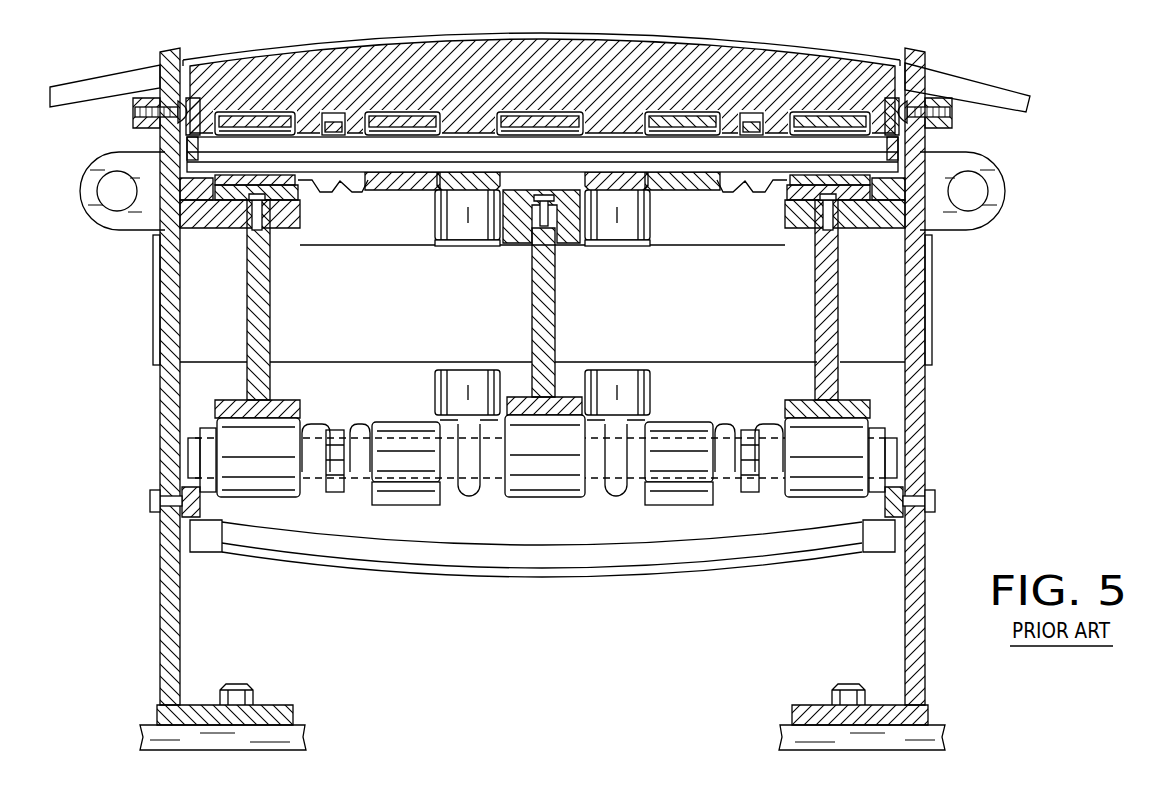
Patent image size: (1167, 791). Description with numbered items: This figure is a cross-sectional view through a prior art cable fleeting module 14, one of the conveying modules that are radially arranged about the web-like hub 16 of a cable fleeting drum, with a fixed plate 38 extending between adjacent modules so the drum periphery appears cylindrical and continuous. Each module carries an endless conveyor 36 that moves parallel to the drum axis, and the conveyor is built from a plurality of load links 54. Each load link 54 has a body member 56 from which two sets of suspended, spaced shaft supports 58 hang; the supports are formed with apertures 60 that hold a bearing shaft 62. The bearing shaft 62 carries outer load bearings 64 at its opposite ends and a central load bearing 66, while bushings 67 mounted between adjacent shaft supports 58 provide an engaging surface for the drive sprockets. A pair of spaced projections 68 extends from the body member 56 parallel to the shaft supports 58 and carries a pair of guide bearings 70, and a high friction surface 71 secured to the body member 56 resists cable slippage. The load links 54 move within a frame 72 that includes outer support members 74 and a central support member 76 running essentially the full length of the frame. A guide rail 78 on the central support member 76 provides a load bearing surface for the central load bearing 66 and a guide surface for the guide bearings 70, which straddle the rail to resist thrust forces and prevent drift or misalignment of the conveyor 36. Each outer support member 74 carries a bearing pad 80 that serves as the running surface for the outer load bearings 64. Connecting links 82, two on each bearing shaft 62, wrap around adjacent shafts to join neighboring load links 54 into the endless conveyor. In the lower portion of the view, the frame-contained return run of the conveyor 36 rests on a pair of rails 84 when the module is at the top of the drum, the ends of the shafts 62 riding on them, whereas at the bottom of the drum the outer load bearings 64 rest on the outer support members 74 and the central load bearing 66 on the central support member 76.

The cable fleeting module 14 is at (960, 300).
The hub 16 is at (780, 737).
The endless conveyor 36 is at (388, 30).
The fixed plate 38 is at (980, 88).
The load link 54 is at (562, 578).
The body member 56 is at (640, 540).
The shaft supports 58 is at (137, 245).
The apertures 60 is at (905, 456).
The bearing shaft 62 is at (195, 445).
The outer load bearings 64 is at (850, 435).
The central load bearing 66 is at (568, 425).
The bushings 67 is at (770, 440).
The spaced projections 68 is at (650, 430).
The guide bearings 70 is at (640, 400).
The high friction surface 71 is at (300, 47).
The frame 72 is at (935, 382).
The outer support members 74 is at (825, 318).
The central support member 76 is at (532, 312).
The guide rail 78 is at (512, 245).
The bearing pad 80 is at (800, 205).
The connecting links 82 is at (720, 470).
The rails 84 is at (934, 506).